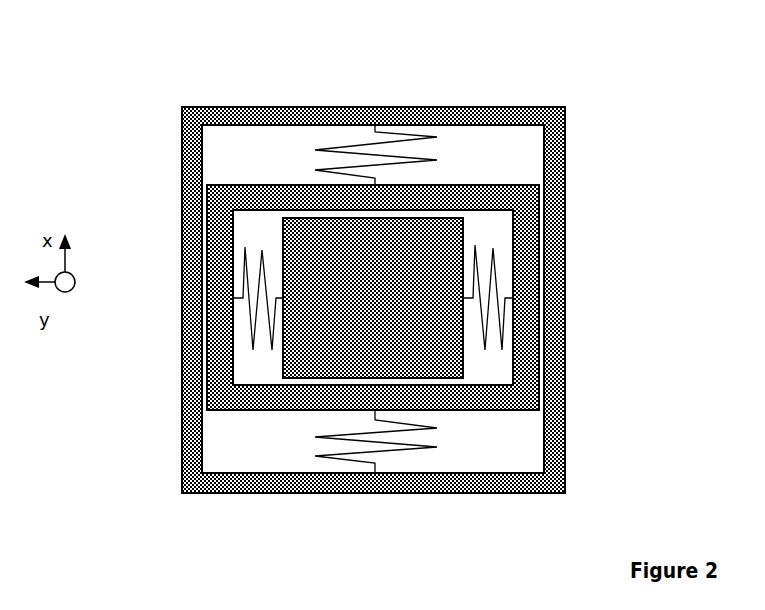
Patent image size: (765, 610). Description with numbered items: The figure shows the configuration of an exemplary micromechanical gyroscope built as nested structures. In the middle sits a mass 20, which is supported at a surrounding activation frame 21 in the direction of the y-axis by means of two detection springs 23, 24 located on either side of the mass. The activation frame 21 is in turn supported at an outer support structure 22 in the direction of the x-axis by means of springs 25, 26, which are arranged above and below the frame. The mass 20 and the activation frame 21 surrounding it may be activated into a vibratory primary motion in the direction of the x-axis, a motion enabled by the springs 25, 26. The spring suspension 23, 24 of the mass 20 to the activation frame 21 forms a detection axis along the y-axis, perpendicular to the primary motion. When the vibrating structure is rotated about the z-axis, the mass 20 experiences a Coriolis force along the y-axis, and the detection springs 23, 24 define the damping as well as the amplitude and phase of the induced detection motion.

The mass 20 is at (463, 232).
The activation frame 21 is at (497, 185).
The support structure 22 is at (538, 107).
The spring 23 is at (245, 247).
The spring 24 is at (492, 258).
The spring 25 is at (422, 137).
The spring 26 is at (432, 440).